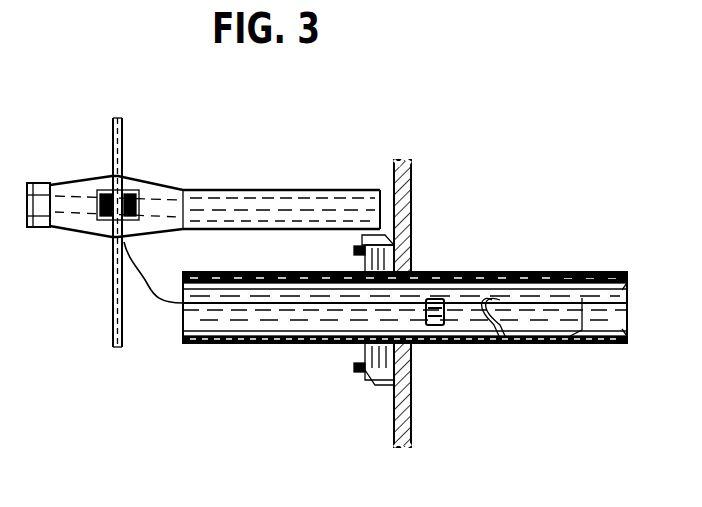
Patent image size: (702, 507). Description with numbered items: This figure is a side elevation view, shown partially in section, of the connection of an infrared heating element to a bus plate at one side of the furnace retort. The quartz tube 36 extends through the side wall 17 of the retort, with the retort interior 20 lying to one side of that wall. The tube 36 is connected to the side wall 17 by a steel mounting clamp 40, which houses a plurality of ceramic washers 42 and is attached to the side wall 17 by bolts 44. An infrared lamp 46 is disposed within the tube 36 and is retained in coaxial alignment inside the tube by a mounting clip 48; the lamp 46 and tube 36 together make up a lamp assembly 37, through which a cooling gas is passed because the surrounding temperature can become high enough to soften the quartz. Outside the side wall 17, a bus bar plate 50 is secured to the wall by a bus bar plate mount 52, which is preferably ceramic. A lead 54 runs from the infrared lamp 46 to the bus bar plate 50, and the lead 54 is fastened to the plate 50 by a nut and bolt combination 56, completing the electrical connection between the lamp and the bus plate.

The side wall 17 is at (413, 194).
The retort interior 20 is at (553, 205).
The quartz tube 36 is at (557, 272).
The lamp assembly 37 is at (597, 277).
The steel mounting clamp 40 is at (366, 376).
The ceramic washers 42 is at (404, 262).
The bolts 44 is at (354, 250).
The infrared lamp 46 is at (578, 330).
The mounting clip 48 is at (500, 340).
The bus bar plate 50 is at (124, 142).
The bus bar plate mount 52 is at (240, 187).
The lead 54 is at (156, 308).
The nut and bolt combination 56 is at (102, 236).